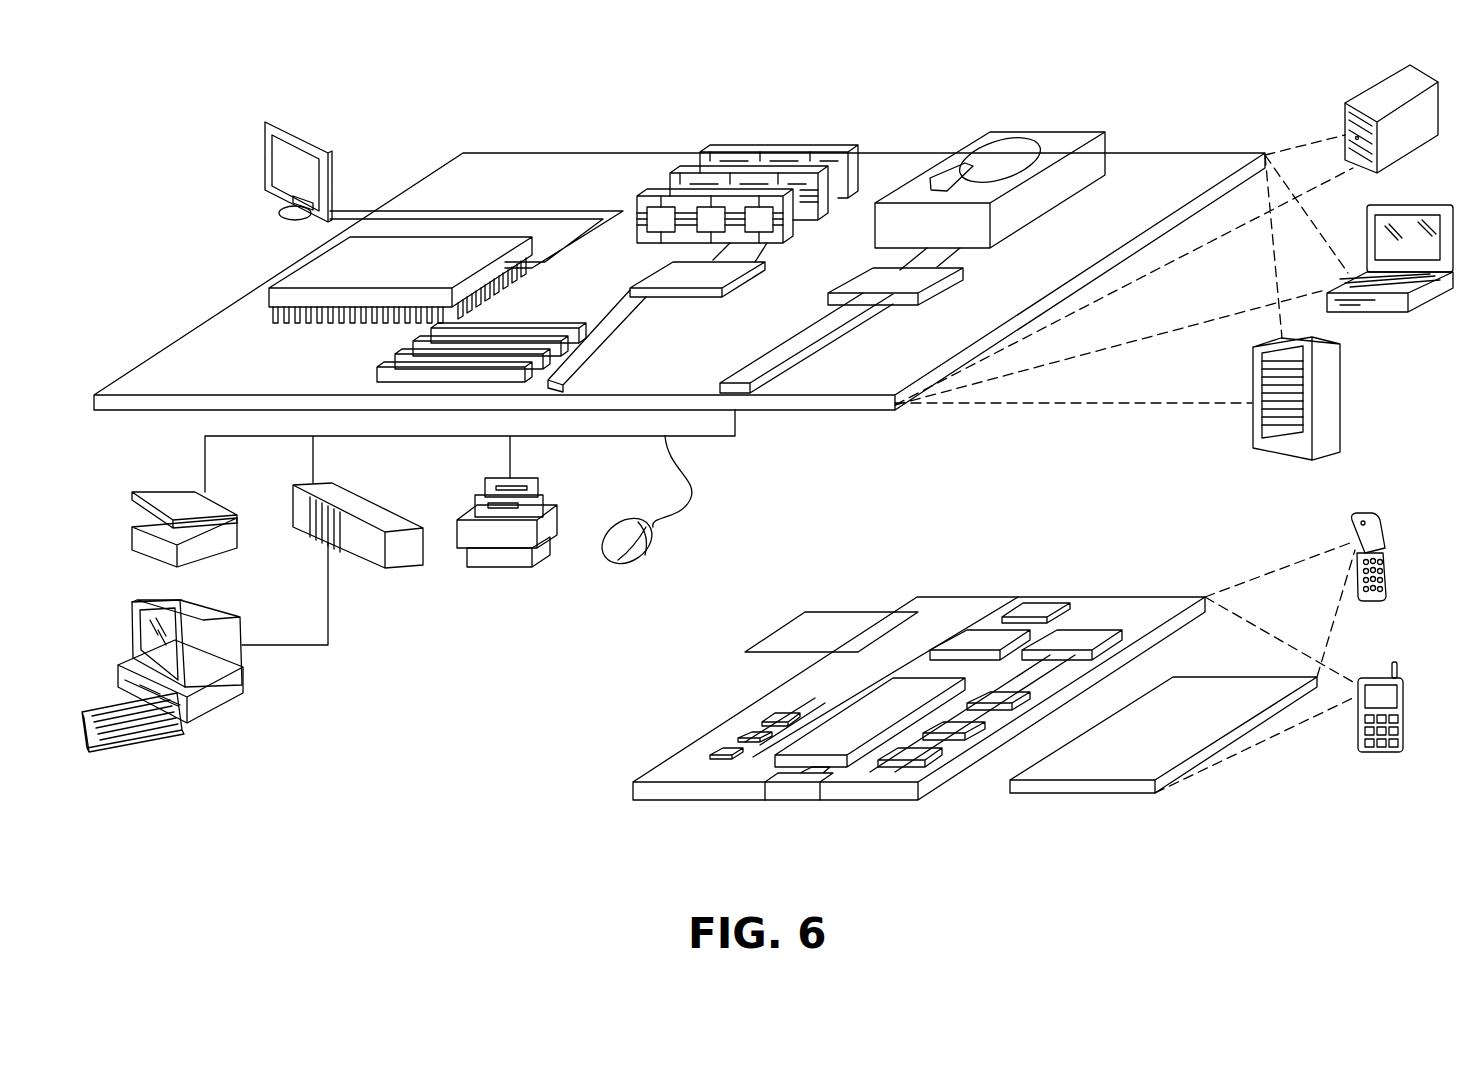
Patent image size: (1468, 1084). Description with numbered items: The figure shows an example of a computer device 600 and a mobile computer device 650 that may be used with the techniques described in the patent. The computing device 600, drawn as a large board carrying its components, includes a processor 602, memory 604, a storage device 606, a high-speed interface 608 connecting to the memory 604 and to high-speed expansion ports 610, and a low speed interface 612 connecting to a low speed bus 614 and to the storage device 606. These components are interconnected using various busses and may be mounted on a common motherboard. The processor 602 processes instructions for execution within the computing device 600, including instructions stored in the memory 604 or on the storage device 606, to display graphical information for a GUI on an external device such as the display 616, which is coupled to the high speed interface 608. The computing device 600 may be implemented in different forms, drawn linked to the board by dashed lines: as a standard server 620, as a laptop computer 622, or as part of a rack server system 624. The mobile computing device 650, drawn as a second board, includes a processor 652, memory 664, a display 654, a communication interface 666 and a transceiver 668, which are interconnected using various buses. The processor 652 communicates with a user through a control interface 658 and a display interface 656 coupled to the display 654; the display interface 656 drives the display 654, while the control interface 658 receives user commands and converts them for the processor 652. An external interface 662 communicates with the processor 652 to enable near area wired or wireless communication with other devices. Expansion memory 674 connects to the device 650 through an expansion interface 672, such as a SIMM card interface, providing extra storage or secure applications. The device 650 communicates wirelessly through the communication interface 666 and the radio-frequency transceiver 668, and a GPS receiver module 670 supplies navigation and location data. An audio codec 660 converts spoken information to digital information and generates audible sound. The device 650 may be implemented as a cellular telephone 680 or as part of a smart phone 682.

The computing device 600 is at (406, 95).
The processor 602 is at (293, 267).
The memory 604 is at (783, 147).
The storage device 606 is at (1035, 130).
The high-speed interface 608 is at (712, 272).
The high-speed expansion ports 610 is at (405, 352).
The low speed interface 612 is at (868, 282).
The low speed bus 614 is at (745, 375).
The display 616 is at (277, 125).
The standard server 620 is at (1367, 100).
The laptop computer 622 is at (1425, 207).
The rack server system 624 is at (1340, 396).
The mobile computer device 650 is at (582, 812).
The processor 652 is at (837, 730).
The display 654 is at (1207, 690).
The display interface 656 is at (898, 752).
The control interface 658 is at (963, 725).
The audio codec 660 is at (1005, 697).
The external interface 662 is at (795, 790).
The memory 664 is at (740, 735).
The communication interface 666 is at (980, 632).
The transceiver 668 is at (1080, 632).
The GPS receiver module 670 is at (1037, 607).
The expansion interface 672 is at (897, 612).
The expansion memory 674 is at (808, 612).
The cellular telephone 680 is at (1367, 518).
The smart phone 682 is at (1373, 677).